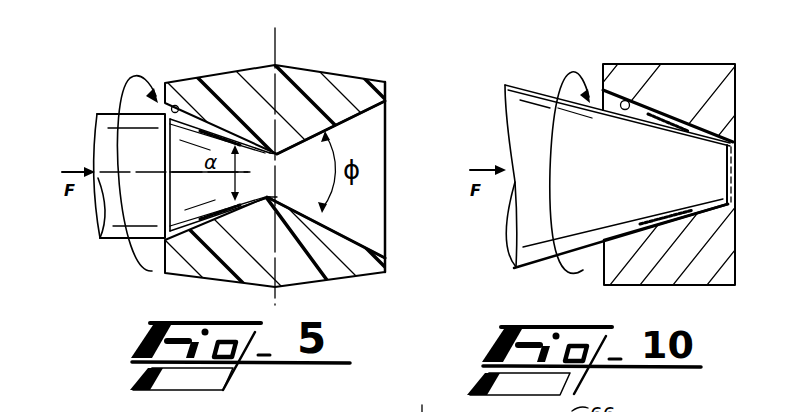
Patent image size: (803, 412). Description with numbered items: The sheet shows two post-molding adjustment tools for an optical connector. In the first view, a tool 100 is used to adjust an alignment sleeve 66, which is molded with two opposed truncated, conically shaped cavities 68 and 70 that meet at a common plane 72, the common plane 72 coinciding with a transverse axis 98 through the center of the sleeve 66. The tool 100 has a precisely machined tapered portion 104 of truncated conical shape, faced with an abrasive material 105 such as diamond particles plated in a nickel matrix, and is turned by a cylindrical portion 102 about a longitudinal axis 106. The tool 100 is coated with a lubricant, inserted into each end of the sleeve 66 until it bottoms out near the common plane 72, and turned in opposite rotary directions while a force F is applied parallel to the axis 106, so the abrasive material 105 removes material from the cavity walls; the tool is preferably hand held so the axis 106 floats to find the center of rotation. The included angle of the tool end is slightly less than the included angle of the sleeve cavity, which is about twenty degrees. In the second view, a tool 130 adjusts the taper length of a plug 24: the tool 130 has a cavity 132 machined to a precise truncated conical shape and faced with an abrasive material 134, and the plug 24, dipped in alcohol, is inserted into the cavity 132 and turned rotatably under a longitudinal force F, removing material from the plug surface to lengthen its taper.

In FIG. 10, the plug 24 is at (533, 268).
In FIG. 5, the alignment sleeve 66 is at (343, 82).
In FIG. 5, the conically shaped cavity 68 is at (373, 225).
In FIG. 5, the conically shaped cavity 70 is at (195, 116).
In FIG. 5, the common plane 72 is at (278, 171).
In FIG. 5, the transverse axis 98 is at (277, 48).
In FIG. 5, the tool 100 is at (202, 112).
In FIG. 5, the cylindrical portion 102 is at (130, 210).
In FIG. 5, the tapered portion 104 is at (209, 193).
In FIG. 5, the abrasive material 105 is at (220, 135).
In FIG. 5, the longitudinal axis 106 is at (100, 176).
In FIG. 10, the tool 130 is at (673, 70).
In FIG. 10, the cavity 132 is at (626, 99).
In FIG. 10, the abrasive material 134 is at (667, 113).